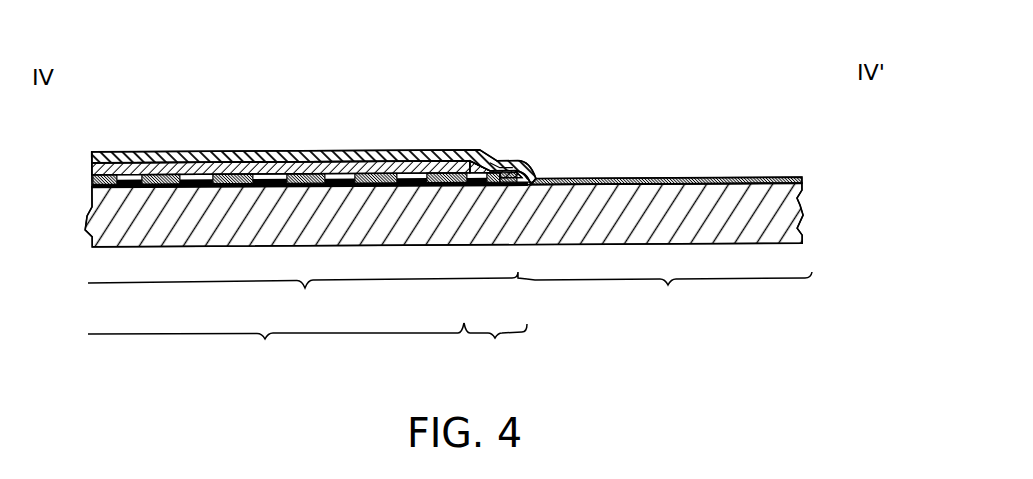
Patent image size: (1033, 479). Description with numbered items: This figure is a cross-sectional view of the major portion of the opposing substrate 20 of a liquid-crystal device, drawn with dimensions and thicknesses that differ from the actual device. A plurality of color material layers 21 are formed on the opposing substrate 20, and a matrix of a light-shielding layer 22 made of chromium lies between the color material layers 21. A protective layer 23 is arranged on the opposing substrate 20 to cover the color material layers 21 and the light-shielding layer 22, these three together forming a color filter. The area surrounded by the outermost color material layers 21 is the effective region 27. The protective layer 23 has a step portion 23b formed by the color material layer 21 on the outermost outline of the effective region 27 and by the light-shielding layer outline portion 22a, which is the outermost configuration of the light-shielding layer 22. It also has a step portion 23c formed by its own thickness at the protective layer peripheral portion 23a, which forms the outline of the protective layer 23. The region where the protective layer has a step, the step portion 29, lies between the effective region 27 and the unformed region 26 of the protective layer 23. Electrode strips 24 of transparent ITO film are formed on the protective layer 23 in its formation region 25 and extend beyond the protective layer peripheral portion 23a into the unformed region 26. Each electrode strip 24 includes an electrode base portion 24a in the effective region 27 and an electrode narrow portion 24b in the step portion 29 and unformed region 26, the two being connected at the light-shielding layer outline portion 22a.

The opposing substrate 20 is at (778, 214).
The color material layer 21 is at (150, 153).
The light-shielding layer 22 is at (197, 152).
The light-shielding layer outline portion 22a is at (523, 166).
The protective layer 23 is at (466, 150).
The protective layer peripheral portion 23a is at (532, 170).
The step portion 23b is at (500, 158).
The step portion 23c is at (542, 178).
The electrode strip 24 is at (485, 130).
The electrode base portion 24a is at (383, 150).
The electrode narrow portion 24b is at (705, 177).
The formation region of the protective layer 25 is at (307, 297).
The unformed region of the protective layer 26 is at (669, 296).
The effective region 27 is at (276, 348).
The step portion of the protective layer 29 is at (495, 346).